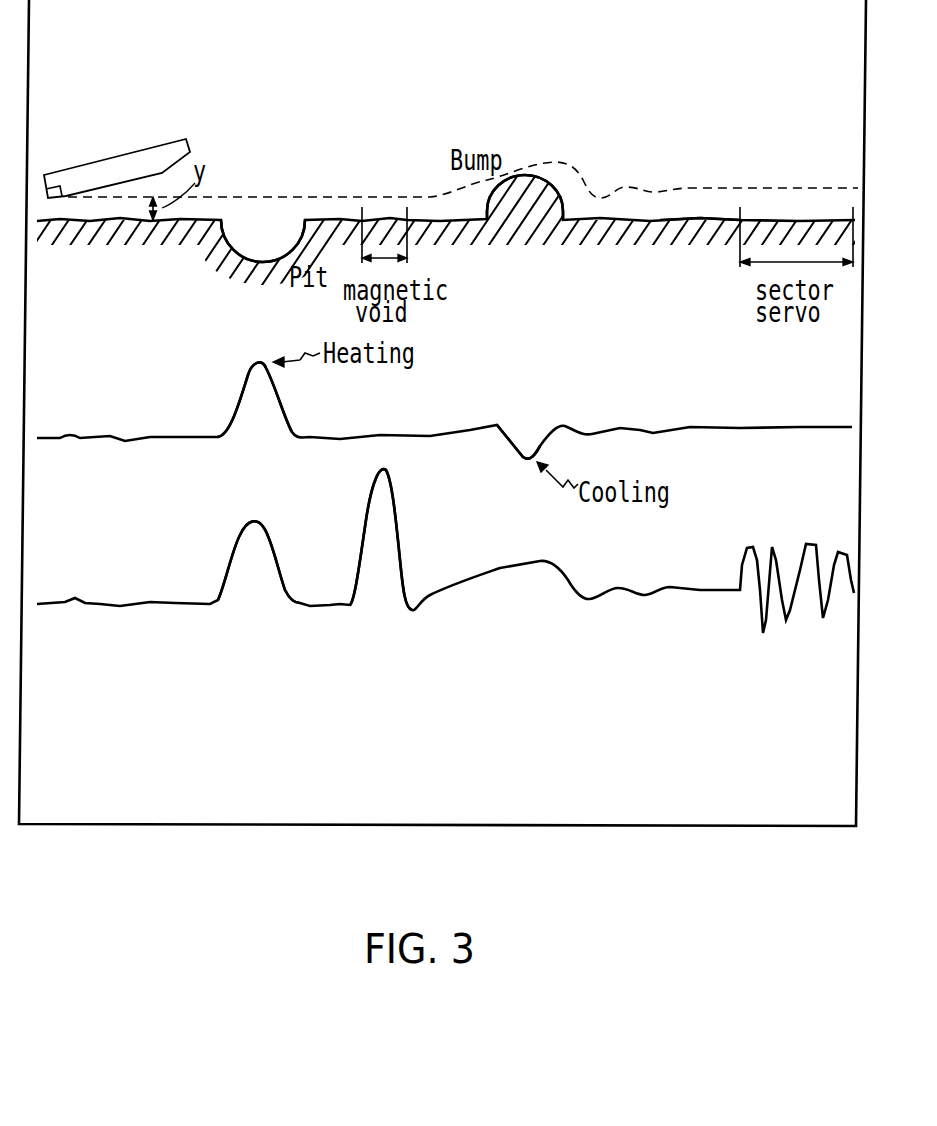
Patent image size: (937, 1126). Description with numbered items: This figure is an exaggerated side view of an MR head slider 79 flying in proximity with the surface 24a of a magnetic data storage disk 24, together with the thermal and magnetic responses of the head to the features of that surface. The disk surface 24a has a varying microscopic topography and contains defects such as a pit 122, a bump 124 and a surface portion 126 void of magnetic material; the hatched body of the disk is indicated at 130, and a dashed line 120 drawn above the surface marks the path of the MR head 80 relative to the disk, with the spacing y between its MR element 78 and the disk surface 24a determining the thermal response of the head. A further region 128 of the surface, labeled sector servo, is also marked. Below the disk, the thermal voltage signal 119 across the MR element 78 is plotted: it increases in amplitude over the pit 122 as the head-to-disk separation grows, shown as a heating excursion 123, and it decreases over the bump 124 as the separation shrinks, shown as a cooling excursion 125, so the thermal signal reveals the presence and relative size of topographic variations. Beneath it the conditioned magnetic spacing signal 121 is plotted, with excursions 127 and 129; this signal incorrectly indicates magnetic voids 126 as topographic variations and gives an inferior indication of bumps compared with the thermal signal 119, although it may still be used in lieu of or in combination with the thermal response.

The MR head 80 is at (134, 112).
The MR head slider 79 is at (142, 160).
The MR element 78 is at (57, 190).
The head flying height path 120 is at (332, 197).
The pit 122 is at (232, 229).
The bump 124 is at (560, 192).
The magnetic data storage disk 24 is at (563, 243).
The disk surface 24a is at (684, 218).
The surface portion void of magnetic material 126 is at (407, 255).
The sector servo region 128 is at (740, 253).
The substrate layer 130 is at (172, 246).
The thermal voltage signal 119 is at (175, 437).
The magnetic spacing signal 121 is at (163, 600).
The heating peak 123 is at (284, 398).
The cooling dip 125 is at (512, 448).
The signal peak from pit 127 is at (265, 522).
The signal spike from bump 129 is at (393, 475).